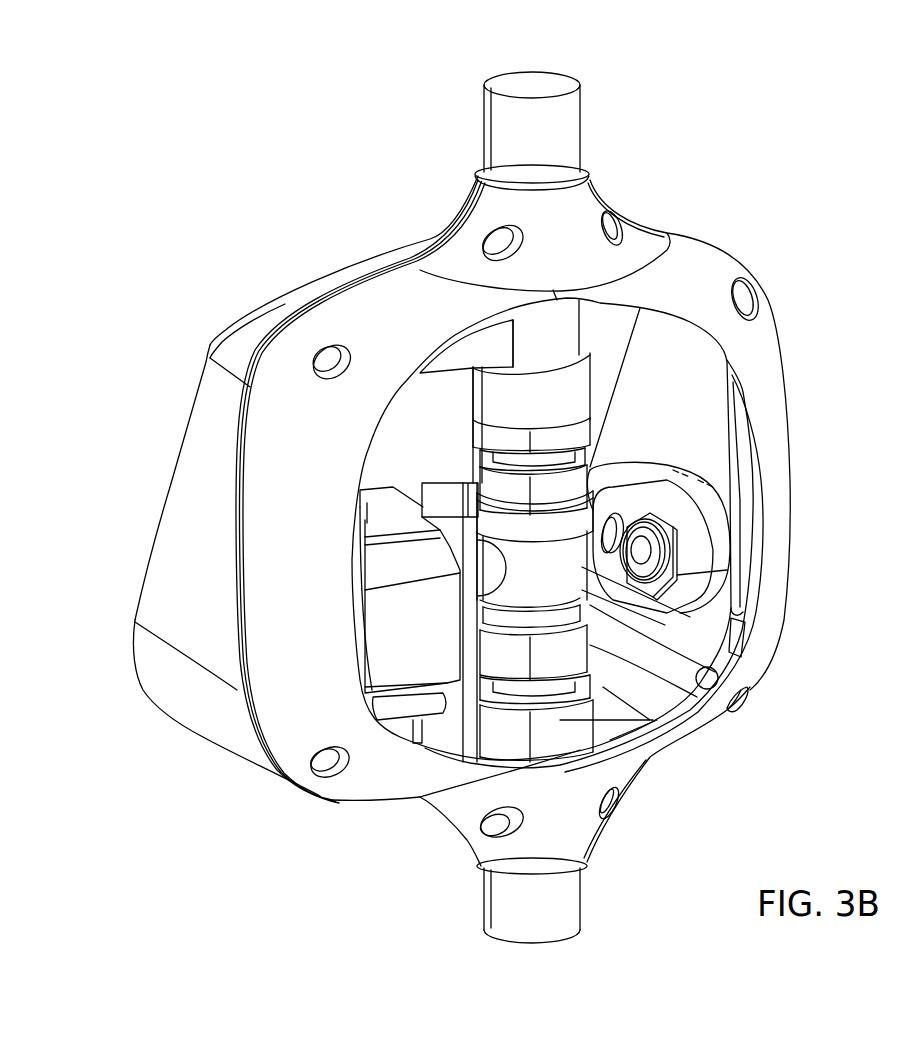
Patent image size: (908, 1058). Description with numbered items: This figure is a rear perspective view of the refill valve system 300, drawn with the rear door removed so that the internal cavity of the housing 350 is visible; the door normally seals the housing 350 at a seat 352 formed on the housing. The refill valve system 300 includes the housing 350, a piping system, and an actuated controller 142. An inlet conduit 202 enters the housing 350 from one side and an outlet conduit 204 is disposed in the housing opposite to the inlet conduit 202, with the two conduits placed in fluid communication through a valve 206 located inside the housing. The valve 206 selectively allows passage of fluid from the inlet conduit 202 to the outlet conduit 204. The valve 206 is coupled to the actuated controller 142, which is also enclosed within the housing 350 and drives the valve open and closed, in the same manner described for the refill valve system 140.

The refill valve system 300 is at (765, 125).
The inlet conduit 202 is at (563, 137).
The outlet conduit 204 is at (553, 898).
The valve 206 is at (567, 578).
The refill valve system 140 is at (606, 450).
The actuated controller 142 is at (396, 628).
The housing 350 is at (213, 708).
The seat 352 is at (750, 687).